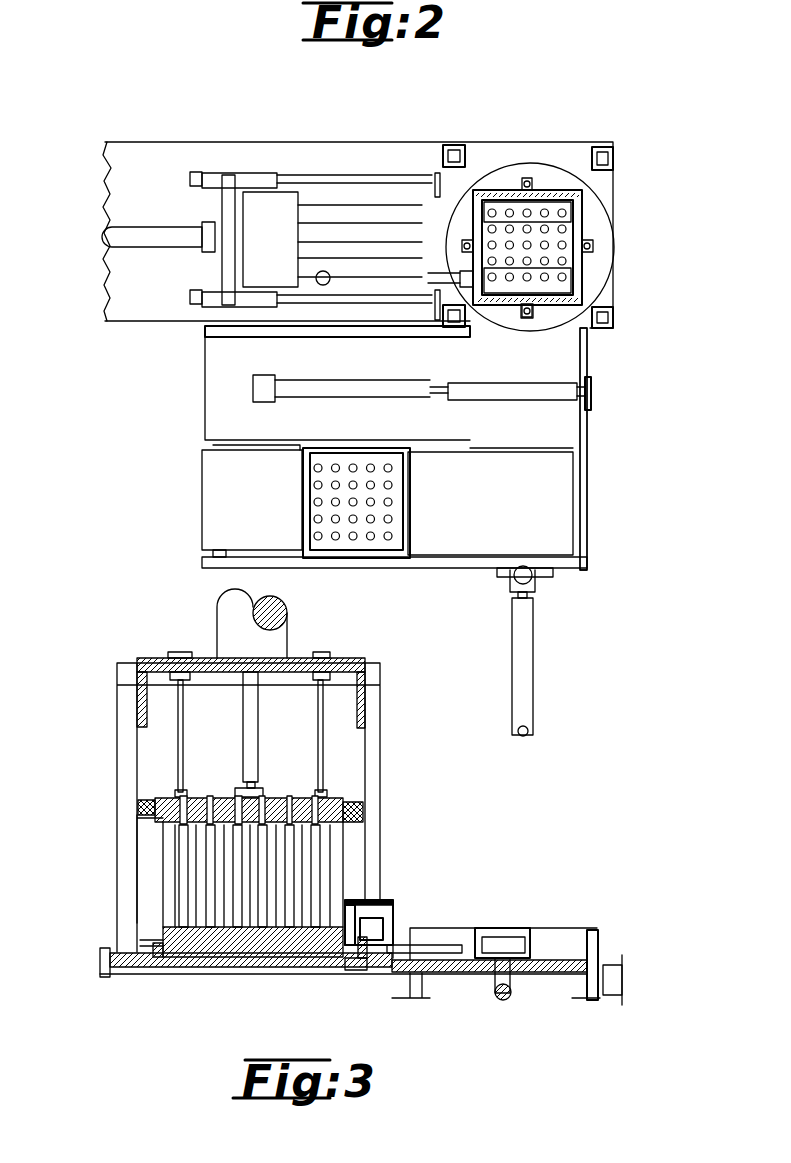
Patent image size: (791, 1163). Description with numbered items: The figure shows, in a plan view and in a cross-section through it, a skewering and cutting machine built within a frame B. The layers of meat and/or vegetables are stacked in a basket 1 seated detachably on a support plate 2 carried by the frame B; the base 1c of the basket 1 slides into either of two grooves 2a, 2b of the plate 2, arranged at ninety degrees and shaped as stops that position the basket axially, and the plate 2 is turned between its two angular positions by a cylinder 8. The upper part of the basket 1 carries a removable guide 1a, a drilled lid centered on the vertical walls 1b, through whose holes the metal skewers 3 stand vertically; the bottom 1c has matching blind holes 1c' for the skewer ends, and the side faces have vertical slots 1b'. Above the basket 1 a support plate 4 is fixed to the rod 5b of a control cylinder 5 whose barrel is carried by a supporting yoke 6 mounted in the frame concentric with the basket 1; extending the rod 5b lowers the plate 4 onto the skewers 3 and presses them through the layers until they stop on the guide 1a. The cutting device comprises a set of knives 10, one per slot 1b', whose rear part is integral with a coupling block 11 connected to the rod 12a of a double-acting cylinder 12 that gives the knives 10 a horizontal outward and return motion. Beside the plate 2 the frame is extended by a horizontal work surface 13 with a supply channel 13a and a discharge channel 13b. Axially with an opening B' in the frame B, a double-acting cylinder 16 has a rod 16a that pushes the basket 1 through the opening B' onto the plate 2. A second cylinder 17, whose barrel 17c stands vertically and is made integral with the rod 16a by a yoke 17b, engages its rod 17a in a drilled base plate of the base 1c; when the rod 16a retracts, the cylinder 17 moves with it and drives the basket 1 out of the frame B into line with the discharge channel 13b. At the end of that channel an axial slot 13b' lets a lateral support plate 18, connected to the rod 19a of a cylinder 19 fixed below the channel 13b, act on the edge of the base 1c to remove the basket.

In FIG. 2, the basket 1 is at (300, 522).
In FIG. 3, the basket 1 is at (167, 878).
In FIG. 3, the guide 1a is at (332, 800).
In FIG. 2, the vertical walls 1b is at (585, 187).
In FIG. 2, the slots 1b' is at (587, 251).
In FIG. 2, the bottom of the basket 1c is at (504, 346).
In FIG. 3, the blind holes 1c' is at (341, 1004).
In FIG. 2, the support plate 2 is at (530, 263).
In FIG. 3, the support plate 2 is at (167, 968).
In FIG. 2, the groove 2a is at (565, 302).
In FIG. 2, the groove 2b is at (583, 197).
In FIG. 2, the metal skewers 3 is at (525, 127).
In FIG. 3, the metal skewers 3 is at (185, 847).
In FIG. 3, the support plate 4 is at (202, 797).
In FIG. 3, the control mechanism 5 is at (263, 648).
In FIG. 3, the rod 5b is at (262, 727).
In FIG. 3, the supporting yoke 6 is at (349, 655).
In FIG. 2, the cylinder 8 is at (404, 265).
In FIG. 2, the knives 10 is at (335, 207).
In FIG. 2, the coupling block 11 is at (255, 207).
In FIG. 2, the double-acting cylinder 12 is at (143, 252).
In FIG. 2, the rod 12a is at (143, 230).
In FIG. 2, the horizontal work surface 13 is at (207, 422).
In FIG. 2, the channel 13a is at (212, 485).
In FIG. 2, the channel 13b is at (336, 461).
In FIG. 3, the channel 13b is at (361, 1003).
In FIG. 2, the axial slot 13b' is at (632, 449).
In FIG. 3, the axial slot 13b' is at (582, 939).
In FIG. 2, the cylinder 16 is at (491, 664).
In FIG. 2, the rod 16a is at (516, 578).
In FIG. 3, the rod 16a is at (450, 945).
In FIG. 2, the cylinder 17 is at (535, 578).
In FIG. 3, the cylinder 17 is at (380, 902).
In FIG. 3, the rod 17a is at (348, 898).
In FIG. 3, the yoke 17b is at (385, 927).
In FIG. 3, the barrel 17c is at (357, 905).
In FIG. 2, the lateral support plate 18 is at (593, 395).
In FIG. 3, the lateral support plate 18 is at (500, 937).
In FIG. 2, the cylinder 19 is at (328, 392).
In FIG. 2, the rod 19a is at (470, 397).
In FIG. 3, the rod 19a is at (517, 990).
In FIG. 2, the frame B is at (358, 205).
In FIG. 2, the opening B' is at (614, 341).